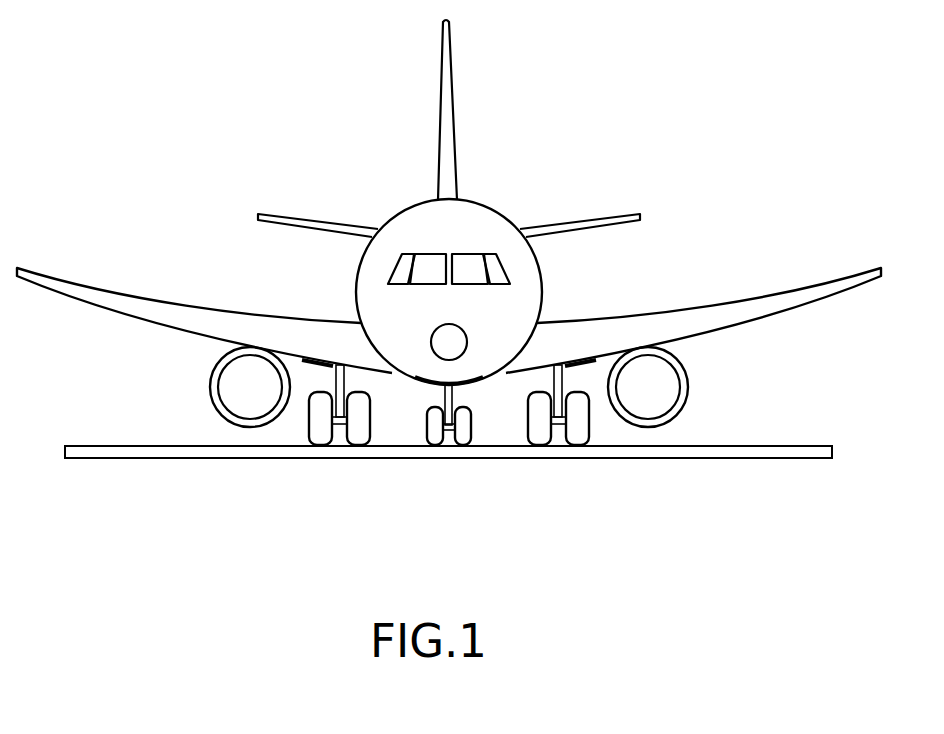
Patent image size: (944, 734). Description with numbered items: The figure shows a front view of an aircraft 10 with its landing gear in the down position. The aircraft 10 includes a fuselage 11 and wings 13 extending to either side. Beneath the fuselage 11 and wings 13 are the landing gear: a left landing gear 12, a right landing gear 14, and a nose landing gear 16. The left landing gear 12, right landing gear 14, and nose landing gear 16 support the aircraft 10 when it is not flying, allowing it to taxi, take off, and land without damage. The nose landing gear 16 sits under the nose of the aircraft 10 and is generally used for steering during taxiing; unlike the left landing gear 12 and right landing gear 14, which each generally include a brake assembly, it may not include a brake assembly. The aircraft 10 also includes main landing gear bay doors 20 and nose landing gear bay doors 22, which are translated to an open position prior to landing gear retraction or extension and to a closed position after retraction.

The aircraft 10 is at (280, 112).
The fuselage 11 is at (477, 222).
The left landing gear 12 is at (608, 430).
The wings 13 is at (156, 318).
The right landing gear 14 is at (285, 430).
The nose landing gear 16 is at (412, 429).
The main landing gear bay doors 20 is at (312, 352).
The nose landing gear bay doors 22 is at (476, 400).